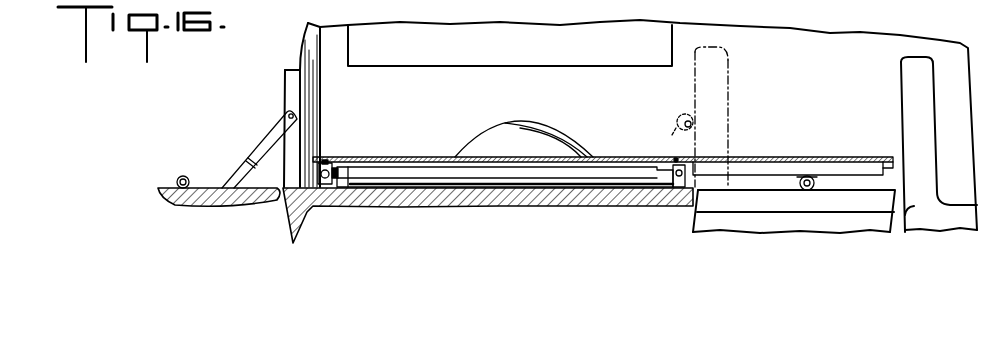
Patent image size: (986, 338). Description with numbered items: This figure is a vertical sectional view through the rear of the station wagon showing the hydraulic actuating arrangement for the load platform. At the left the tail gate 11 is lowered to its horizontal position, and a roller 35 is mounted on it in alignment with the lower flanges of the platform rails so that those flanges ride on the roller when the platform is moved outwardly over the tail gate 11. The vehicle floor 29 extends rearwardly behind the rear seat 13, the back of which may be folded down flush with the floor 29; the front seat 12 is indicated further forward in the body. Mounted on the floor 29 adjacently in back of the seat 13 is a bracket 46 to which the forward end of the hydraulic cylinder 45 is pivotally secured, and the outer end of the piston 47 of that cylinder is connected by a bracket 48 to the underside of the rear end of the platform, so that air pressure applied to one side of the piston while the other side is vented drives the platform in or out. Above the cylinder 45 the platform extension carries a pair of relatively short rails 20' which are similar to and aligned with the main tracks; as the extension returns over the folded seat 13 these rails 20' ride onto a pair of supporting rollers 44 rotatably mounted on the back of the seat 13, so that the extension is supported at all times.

The tail gate 11 is at (204, 196).
The front seat 12 is at (914, 80).
The rear seat 13 is at (730, 64).
The rails 20' is at (848, 147).
The floor 29 is at (418, 195).
The rollers 35 is at (188, 177).
The supporting rollers 44 is at (803, 178).
The hydraulic cylinder 45 is at (563, 170).
The bracket 46 is at (683, 163).
The piston 47 is at (330, 158).
The bracket 48 is at (326, 164).